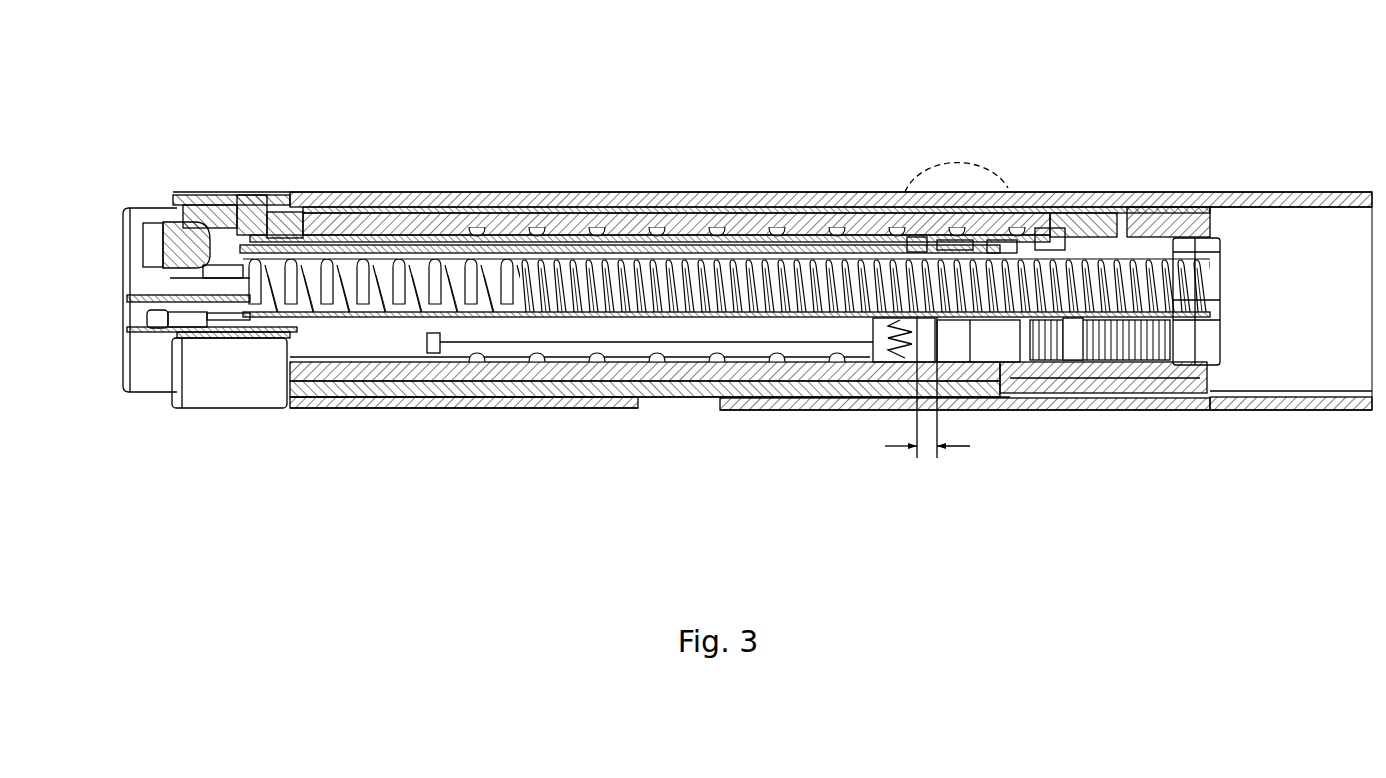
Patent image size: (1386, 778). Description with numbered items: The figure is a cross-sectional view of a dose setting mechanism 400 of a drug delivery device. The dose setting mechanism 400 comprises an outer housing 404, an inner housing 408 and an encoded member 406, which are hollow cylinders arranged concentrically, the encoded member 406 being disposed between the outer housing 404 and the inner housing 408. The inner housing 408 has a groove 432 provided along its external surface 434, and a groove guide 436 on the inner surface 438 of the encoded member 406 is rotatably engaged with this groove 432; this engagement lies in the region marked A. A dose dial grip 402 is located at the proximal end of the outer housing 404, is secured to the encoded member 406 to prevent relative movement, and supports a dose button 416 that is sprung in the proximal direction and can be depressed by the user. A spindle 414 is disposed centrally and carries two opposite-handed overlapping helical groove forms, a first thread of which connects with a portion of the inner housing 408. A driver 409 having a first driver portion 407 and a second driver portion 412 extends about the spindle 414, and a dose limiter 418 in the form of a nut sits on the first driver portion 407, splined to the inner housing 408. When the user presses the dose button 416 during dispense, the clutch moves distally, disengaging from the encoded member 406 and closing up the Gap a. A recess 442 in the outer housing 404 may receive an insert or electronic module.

The dose setting mechanism 400 is at (830, 78).
The dose dial grip 402 is at (222, 194).
The outer housing 404 is at (612, 193).
The encoded member 406 is at (378, 207).
The first driver portion 407 is at (1207, 207).
The inner housing 408 is at (1165, 207).
The driver 409 is at (480, 260).
The second driver portion 412 is at (1053, 212).
The spindle 414 is at (1220, 302).
The dose button 416 is at (122, 283).
The dose limiter 418 is at (1085, 378).
The groove 432 is at (658, 212).
The external surface 434 is at (745, 207).
The groove guide 436 is at (1005, 207).
The inner surface 438 is at (1100, 212).
The recess 442 is at (678, 398).
The region A is at (978, 170).
The Gap a is at (960, 448).